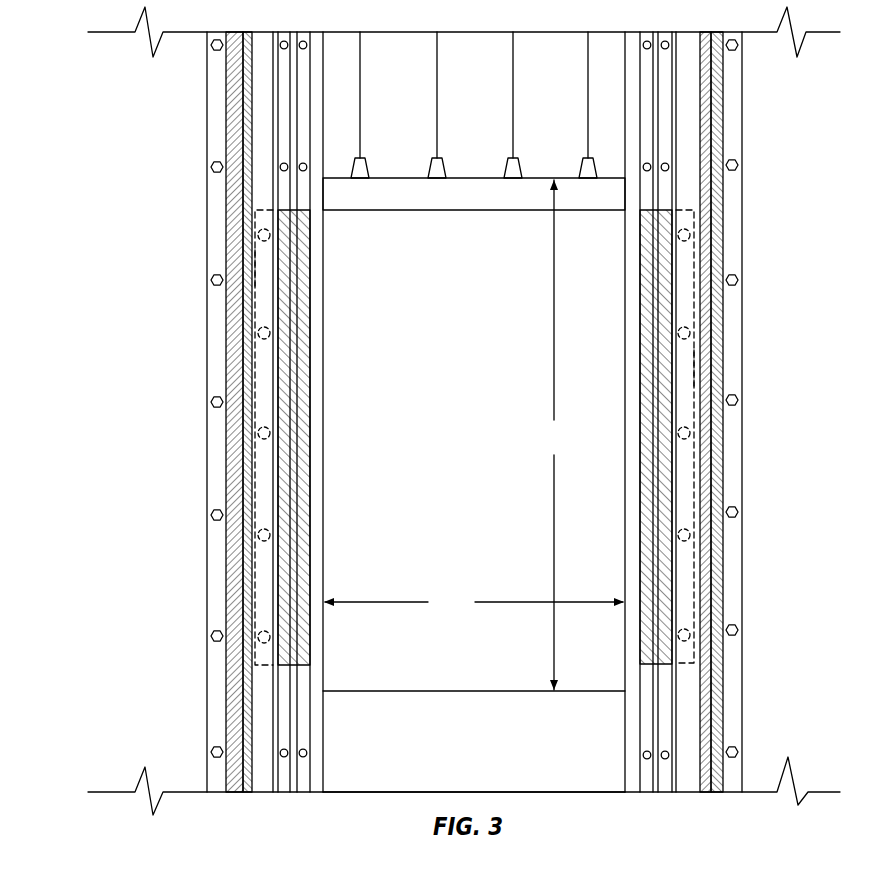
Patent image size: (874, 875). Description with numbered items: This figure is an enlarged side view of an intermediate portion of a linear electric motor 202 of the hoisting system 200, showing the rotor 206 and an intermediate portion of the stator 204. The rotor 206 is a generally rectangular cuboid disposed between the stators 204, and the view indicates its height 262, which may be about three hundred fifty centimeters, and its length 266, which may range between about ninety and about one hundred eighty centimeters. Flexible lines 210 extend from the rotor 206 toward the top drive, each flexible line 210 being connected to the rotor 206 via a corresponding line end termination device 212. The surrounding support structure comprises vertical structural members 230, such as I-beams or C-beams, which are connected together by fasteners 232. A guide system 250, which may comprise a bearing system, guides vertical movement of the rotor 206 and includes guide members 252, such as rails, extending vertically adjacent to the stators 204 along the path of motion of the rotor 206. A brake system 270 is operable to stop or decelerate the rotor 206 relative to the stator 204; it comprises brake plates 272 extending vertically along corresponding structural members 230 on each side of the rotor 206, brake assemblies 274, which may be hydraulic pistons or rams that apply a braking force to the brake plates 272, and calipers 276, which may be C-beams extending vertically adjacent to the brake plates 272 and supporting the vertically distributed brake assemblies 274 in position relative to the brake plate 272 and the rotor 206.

The hoisting system 200 is at (88, 80).
The linear electric motor 202 is at (400, 165).
The stator 204 is at (502, 760).
The rotor 206 is at (502, 358).
The flexible line 210 is at (588, 75).
The line end termination device 212 is at (504, 166).
The vertical structural member 230 is at (207, 93).
The fastener 232 is at (211, 638).
The guide system 250 is at (282, 152).
The guide member 252 is at (658, 119).
The height 262 is at (553, 435).
The length 266 is at (474, 602).
The brake system 270 is at (258, 200).
The brake plate 272 is at (262, 692).
The brake assembly 274 is at (258, 433).
The caliper 276 is at (255, 268).